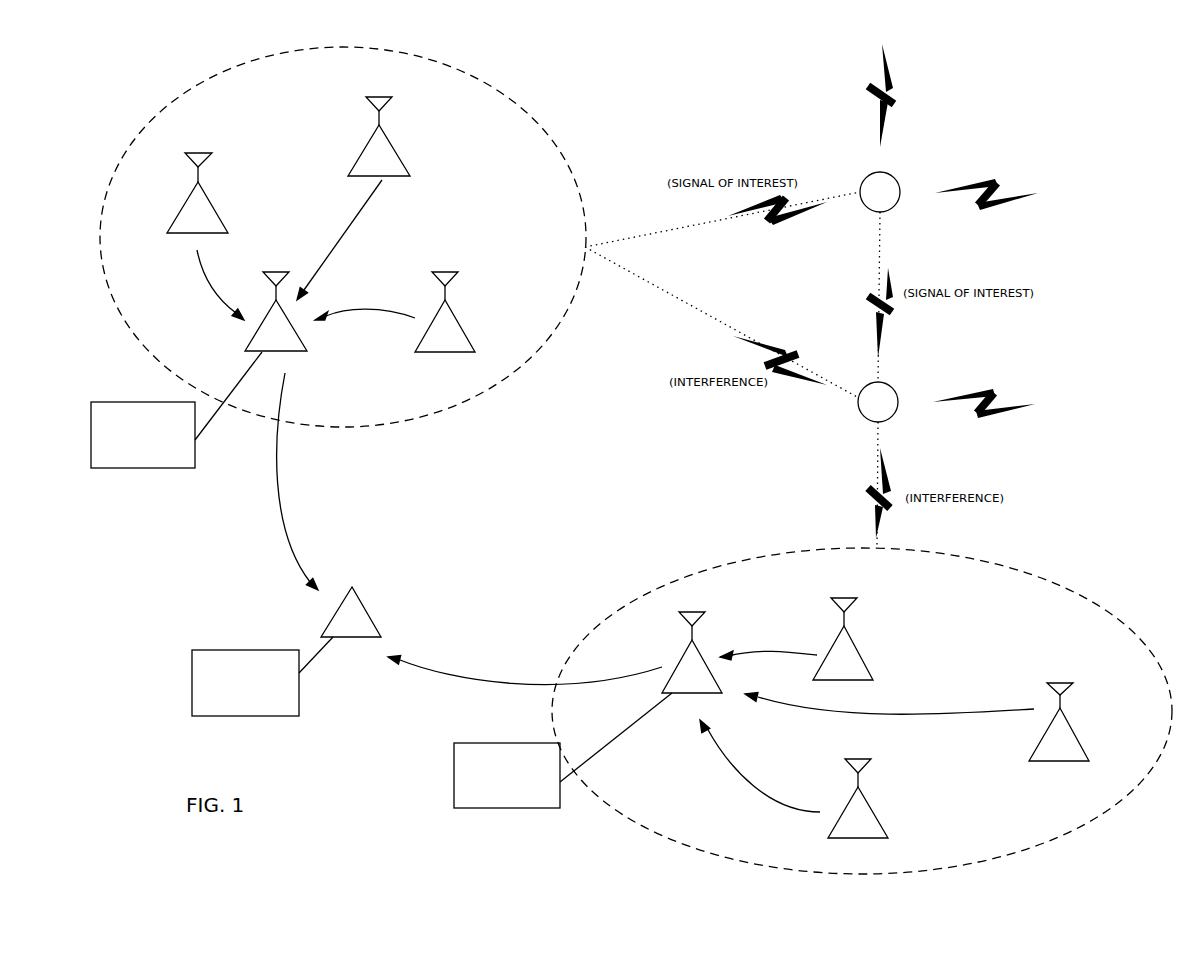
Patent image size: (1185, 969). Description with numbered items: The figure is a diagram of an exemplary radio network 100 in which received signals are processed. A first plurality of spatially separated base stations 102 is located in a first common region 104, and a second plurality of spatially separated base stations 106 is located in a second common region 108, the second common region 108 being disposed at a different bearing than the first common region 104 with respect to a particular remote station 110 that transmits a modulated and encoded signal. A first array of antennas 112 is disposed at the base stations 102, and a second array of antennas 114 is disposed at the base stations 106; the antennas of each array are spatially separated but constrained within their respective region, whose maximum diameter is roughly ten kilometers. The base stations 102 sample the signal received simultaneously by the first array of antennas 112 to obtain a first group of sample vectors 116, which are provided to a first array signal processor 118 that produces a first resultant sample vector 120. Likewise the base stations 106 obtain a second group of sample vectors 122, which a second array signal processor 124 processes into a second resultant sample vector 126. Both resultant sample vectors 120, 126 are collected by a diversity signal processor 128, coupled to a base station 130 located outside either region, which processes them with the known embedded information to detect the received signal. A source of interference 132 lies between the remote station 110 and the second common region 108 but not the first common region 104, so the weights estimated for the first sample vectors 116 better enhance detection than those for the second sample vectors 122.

The radio network 100 is at (580, 465).
The first plurality of spatially separated base stations 102 is at (214, 210).
The first common region 104 is at (517, 107).
The second plurality of spatially separated base stations 106 is at (685, 656).
The second common region 108 is at (1022, 581).
The remote station 110 is at (898, 177).
The first array of antennas 112 is at (199, 153).
The second array of antennas 114 is at (700, 612).
The first group of sample vectors 116 is at (345, 232).
The first array signal processor 118 is at (154, 470).
The first resultant sample vector 120 is at (287, 510).
The second group of sample vectors 122 is at (750, 646).
The second array signal processor 124 is at (467, 742).
The second resultant sample vector 126 is at (427, 672).
The diversity signal processor 128 is at (221, 650).
The base station 130 is at (370, 612).
The source of interference 132 is at (893, 388).